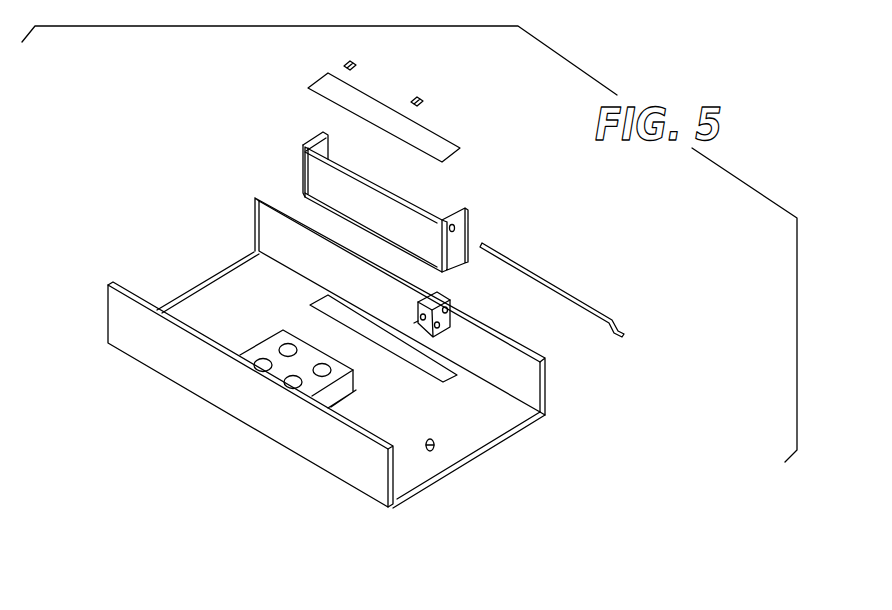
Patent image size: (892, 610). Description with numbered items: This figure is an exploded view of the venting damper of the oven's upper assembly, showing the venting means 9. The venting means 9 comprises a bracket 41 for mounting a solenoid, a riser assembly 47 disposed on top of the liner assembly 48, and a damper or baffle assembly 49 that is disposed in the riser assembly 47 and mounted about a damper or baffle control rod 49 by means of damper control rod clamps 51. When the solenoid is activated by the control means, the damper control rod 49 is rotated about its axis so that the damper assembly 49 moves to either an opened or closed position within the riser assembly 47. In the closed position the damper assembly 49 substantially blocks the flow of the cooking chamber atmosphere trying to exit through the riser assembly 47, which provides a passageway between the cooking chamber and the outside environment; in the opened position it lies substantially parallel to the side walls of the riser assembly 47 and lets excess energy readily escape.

The venting means 9 is at (343, 316).
The bracket 41 is at (450, 327).
The riser assembly 47 is at (318, 177).
The liner assembly 48 is at (172, 365).
The damper assembly and damper control rod 49 is at (325, 86).
The damper control rod clamps 51 is at (424, 101).